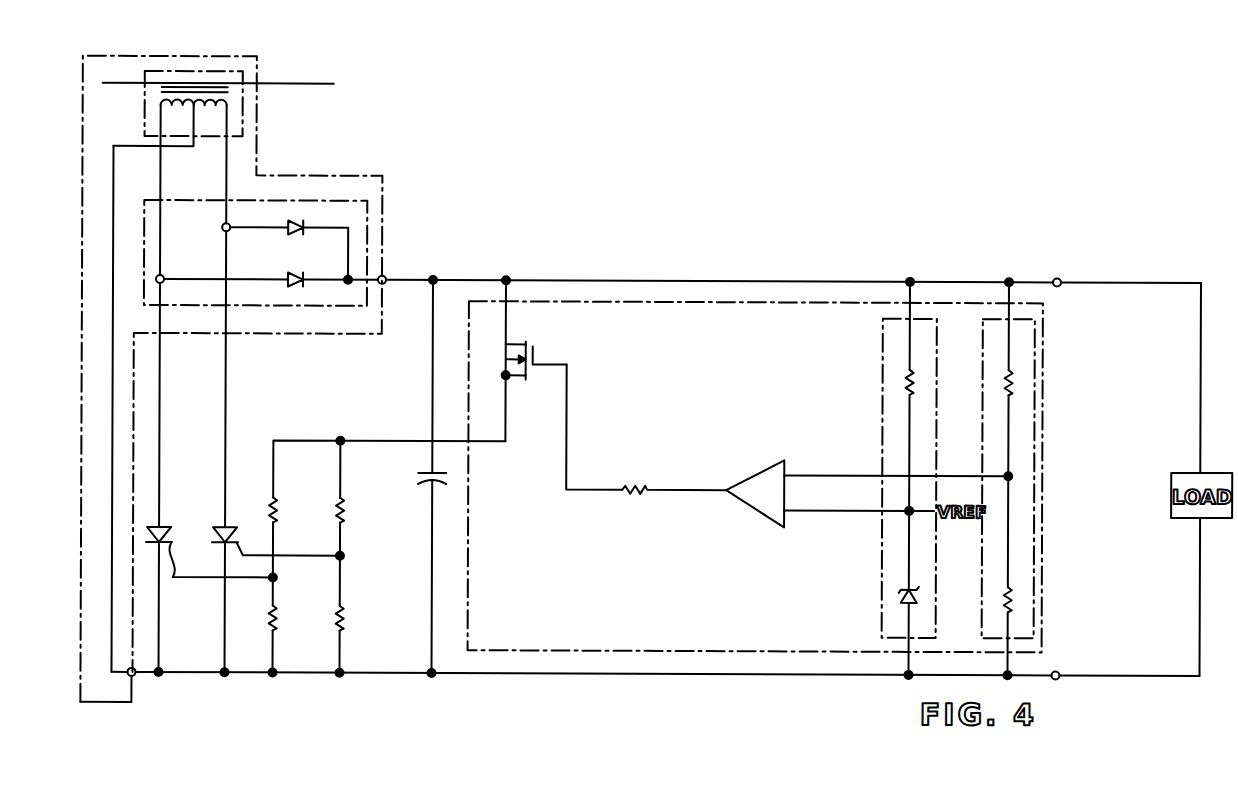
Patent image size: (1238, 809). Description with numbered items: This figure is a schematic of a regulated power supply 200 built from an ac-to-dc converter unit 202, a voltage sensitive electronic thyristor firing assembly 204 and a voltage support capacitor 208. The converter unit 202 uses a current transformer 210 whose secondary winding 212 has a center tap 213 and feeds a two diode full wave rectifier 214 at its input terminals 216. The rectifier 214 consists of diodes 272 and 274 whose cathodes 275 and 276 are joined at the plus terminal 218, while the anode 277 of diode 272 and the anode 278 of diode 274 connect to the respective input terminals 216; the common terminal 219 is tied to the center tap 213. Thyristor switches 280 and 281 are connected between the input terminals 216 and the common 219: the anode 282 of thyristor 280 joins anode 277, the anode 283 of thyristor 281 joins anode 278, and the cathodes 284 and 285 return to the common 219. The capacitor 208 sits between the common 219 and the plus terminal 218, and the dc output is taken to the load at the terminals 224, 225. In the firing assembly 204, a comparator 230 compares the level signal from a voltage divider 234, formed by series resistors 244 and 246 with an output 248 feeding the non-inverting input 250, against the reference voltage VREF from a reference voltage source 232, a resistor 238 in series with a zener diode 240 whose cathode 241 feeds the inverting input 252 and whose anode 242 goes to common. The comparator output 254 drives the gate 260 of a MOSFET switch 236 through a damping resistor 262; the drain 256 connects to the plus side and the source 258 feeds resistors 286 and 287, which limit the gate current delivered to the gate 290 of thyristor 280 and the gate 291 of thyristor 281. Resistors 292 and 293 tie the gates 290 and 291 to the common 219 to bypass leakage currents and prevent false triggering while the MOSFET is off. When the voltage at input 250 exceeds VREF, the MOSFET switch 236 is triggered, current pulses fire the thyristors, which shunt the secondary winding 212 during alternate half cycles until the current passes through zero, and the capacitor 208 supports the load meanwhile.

The power supply 200 is at (681, 708).
The ac-to-dc converter unit 202 is at (385, 197).
The voltage sensitive electronic thyristor firing assembly 204 is at (705, 300).
The voltage support capacitor 208 is at (447, 475).
The current transformer 210 is at (213, 108).
The secondary winding 212 is at (160, 112).
The center tap 213 is at (188, 147).
The two diode full wave rectifier 214 is at (144, 222).
The input terminals 216 is at (223, 224).
The plus terminal 218 is at (384, 276).
The common terminal 219 is at (129, 676).
The output terminal 224 is at (1058, 277).
The output terminal 225 is at (1059, 671).
The comparator 230 is at (750, 486).
The reference voltage source 232 is at (882, 358).
The voltage divider 234 is at (1038, 345).
The MOSFET switch 236 is at (536, 352).
The resistor 238 is at (915, 385).
The zener diode 240 is at (916, 594).
The cathode 241 is at (915, 582).
The anode 242 is at (915, 618).
The resistor 244 is at (1013, 385).
The resistor 246 is at (1013, 600).
The voltage divider output 248 is at (1006, 472).
The non-inverting input 250 is at (788, 469).
The inverting input 252 is at (792, 515).
The comparator output 254 is at (727, 489).
The drain 256 is at (508, 341).
The source 258 is at (508, 410).
The gate 260 is at (571, 362).
The damping resistor 262 is at (632, 487).
The diode 272 is at (295, 223).
The diode 274 is at (295, 273).
The cathode 275 is at (327, 222).
The cathode 276 is at (321, 278).
The anode 277 is at (263, 224).
The anode 278 is at (268, 283).
The thyristor switch 280 is at (222, 533).
The thyristor switch 281 is at (165, 526).
The anode 282 is at (225, 398).
The anode 283 is at (161, 384).
The cathode 284 is at (226, 655).
The cathode 285 is at (160, 612).
The resistor 286 is at (345, 510).
The resistor 287 is at (279, 512).
The gate 290 is at (241, 551).
The gate 291 is at (215, 574).
The resistor 292 is at (345, 612).
The resistor 293 is at (269, 628).